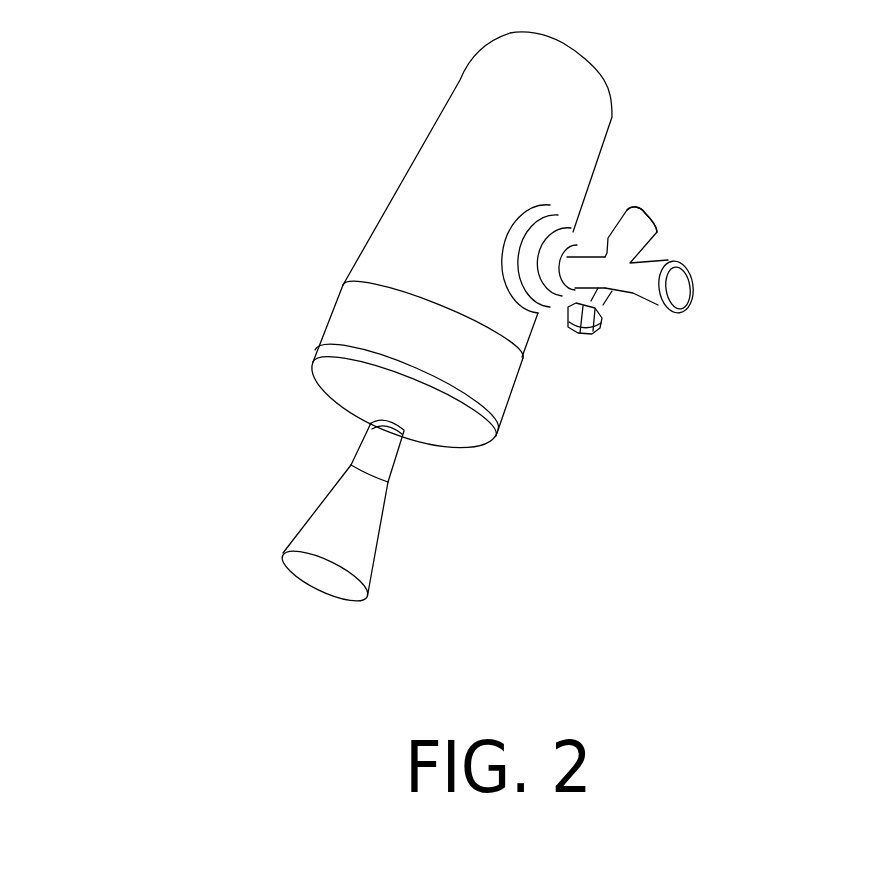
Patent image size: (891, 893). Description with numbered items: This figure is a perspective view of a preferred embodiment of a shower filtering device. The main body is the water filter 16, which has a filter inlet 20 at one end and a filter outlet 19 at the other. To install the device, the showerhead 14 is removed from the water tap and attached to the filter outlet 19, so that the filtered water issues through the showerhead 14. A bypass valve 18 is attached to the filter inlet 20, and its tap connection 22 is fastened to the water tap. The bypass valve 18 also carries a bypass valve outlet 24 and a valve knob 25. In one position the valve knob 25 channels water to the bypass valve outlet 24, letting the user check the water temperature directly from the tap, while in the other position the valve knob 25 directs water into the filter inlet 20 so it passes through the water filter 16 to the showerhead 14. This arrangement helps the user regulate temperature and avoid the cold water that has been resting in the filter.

The water filter 16 is at (283, 148).
The showerhead 14 is at (355, 522).
The filter outlet 19 is at (370, 423).
The filter inlet 20 is at (577, 240).
The bypass valve 18 is at (611, 283).
The tap connection 22 is at (632, 235).
The valve knob 25 is at (677, 295).
The bypass valve outlet 24 is at (593, 335).